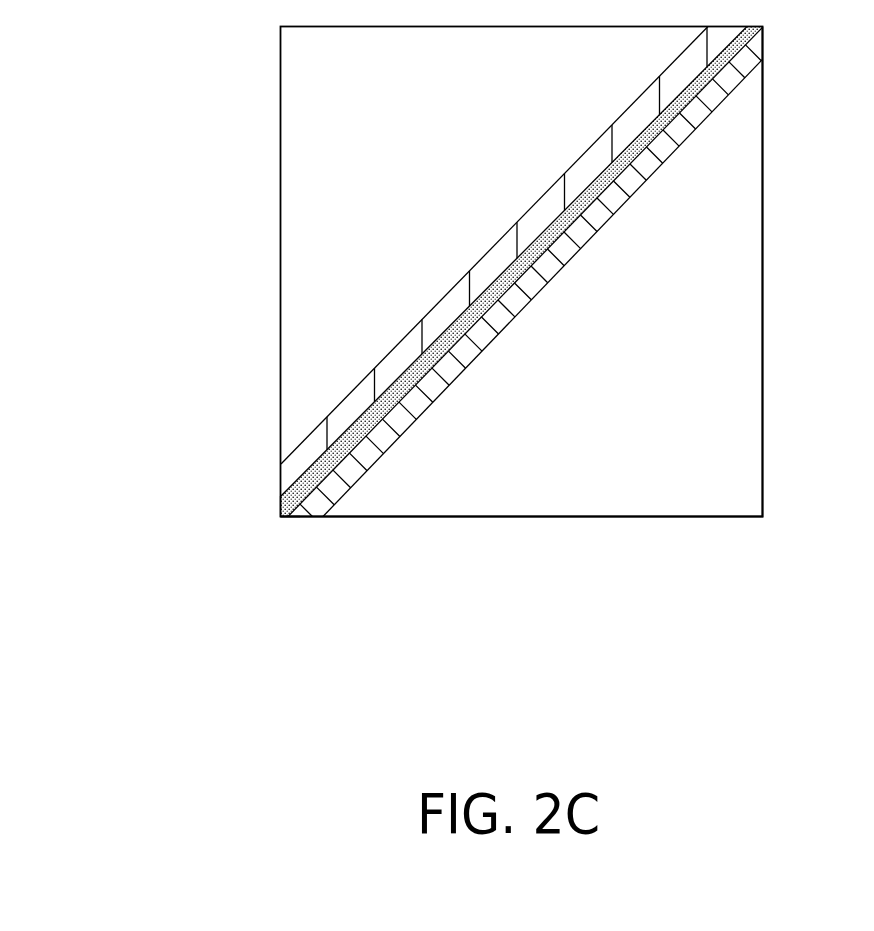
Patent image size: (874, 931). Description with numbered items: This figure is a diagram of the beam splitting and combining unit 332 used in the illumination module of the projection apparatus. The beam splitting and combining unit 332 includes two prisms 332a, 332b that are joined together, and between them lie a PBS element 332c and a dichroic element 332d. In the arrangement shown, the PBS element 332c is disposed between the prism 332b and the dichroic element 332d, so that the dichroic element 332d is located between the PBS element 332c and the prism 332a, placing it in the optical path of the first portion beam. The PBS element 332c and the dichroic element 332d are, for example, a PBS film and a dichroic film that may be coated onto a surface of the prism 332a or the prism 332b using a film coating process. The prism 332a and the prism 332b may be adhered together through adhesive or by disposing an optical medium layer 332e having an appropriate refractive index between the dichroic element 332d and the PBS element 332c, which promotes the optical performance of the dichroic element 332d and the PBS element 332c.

The beam splitting and combining unit 332 is at (866, 600).
The prism 332a is at (560, 486).
The prism 332b is at (322, 258).
The PBS element 332c is at (352, 418).
The dichroic element 332d is at (356, 484).
The optical medium layer 332e is at (284, 511).